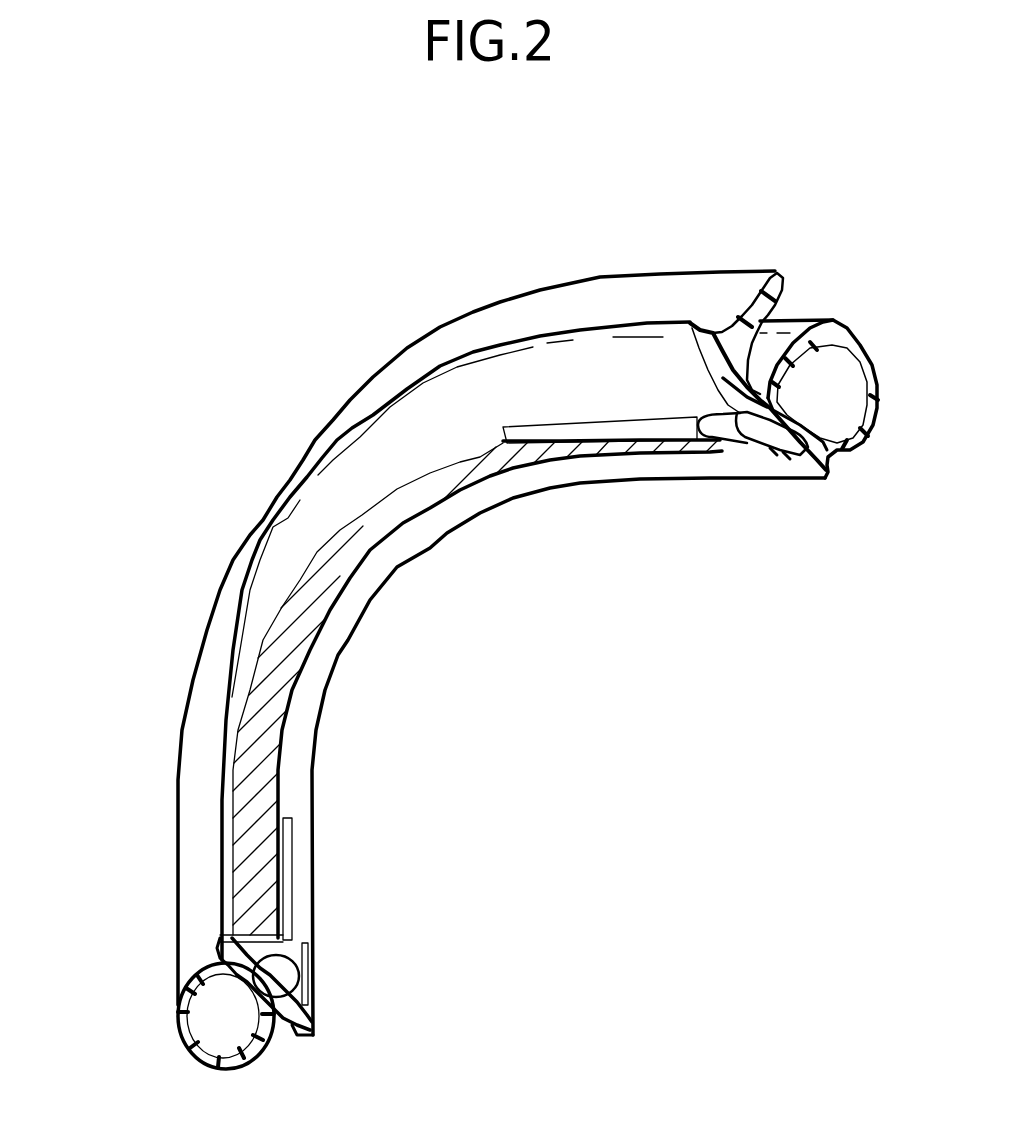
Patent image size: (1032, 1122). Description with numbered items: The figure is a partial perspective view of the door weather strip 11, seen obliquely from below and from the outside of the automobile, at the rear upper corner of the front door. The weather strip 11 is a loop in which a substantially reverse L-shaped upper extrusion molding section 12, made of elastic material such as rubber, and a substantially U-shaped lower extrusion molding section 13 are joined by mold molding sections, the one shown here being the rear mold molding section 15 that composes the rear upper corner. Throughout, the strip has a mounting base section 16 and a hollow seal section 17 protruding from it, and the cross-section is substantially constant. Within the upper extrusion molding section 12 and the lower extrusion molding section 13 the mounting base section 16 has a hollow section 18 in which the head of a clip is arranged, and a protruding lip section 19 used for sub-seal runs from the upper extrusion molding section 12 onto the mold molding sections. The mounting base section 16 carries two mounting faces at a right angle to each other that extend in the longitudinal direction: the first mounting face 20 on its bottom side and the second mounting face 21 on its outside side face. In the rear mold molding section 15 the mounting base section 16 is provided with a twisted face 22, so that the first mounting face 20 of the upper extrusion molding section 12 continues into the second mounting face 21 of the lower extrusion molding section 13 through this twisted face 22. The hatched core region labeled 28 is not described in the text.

The door weather strip 11 is at (262, 440).
The upper extrusion molding section 12 is at (832, 268).
The lower extrusion molding section 13 is at (145, 1021).
The rear mold molding section 15 is at (364, 330).
The mounting base section 16 is at (727, 341).
The hollow seal section 17 is at (872, 355).
The hollow section 18 is at (797, 448).
The lip section 19 is at (477, 333).
The first mounting face 20 is at (718, 455).
The second mounting face 21 is at (272, 858).
The twisted face 22 is at (428, 500).
The hatched core 28 is at (283, 712).